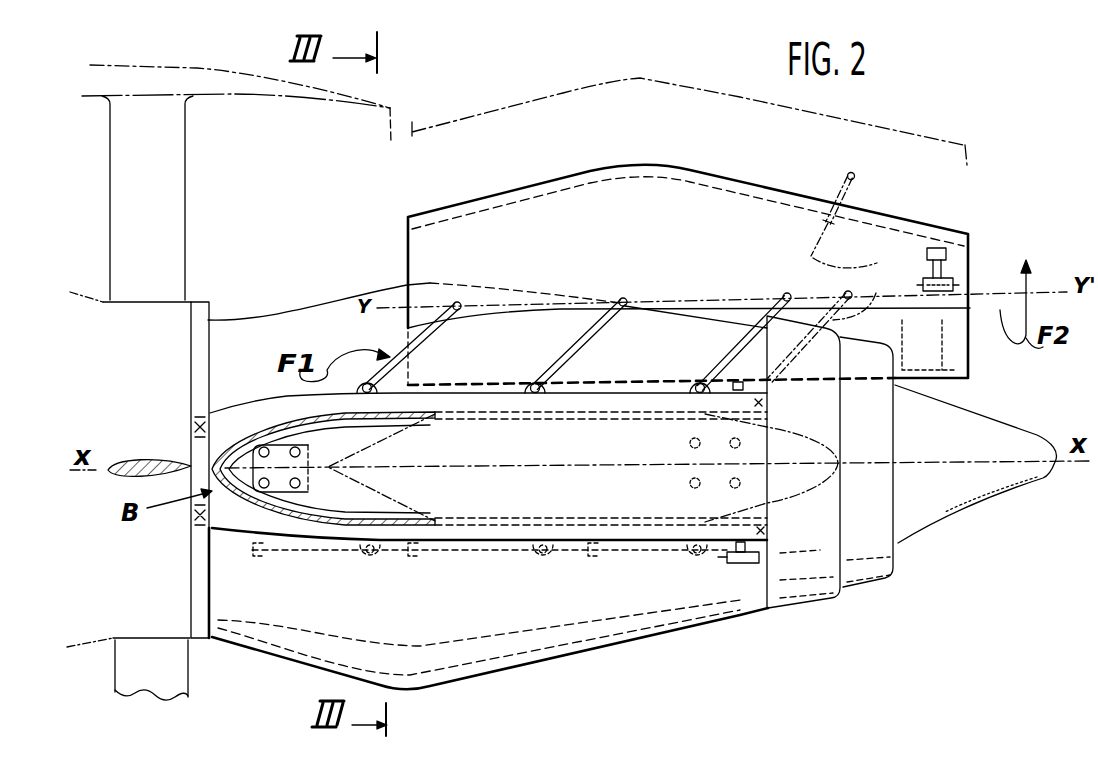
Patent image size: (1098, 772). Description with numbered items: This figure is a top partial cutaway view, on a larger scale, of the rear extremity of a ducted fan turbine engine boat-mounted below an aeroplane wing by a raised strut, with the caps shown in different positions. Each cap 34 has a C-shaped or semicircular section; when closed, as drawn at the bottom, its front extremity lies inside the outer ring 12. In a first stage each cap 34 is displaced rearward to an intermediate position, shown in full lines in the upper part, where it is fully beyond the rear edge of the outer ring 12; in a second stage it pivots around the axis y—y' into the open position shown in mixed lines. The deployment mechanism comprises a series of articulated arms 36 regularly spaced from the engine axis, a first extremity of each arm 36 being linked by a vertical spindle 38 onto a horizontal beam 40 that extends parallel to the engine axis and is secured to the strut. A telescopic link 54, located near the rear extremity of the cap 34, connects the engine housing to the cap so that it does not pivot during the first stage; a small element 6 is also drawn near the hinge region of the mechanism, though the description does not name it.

The outer ring 12 is at (204, 68).
The cap 34 is at (692, 143).
The articulated arm 36 is at (404, 352).
The vertical spindle 38 is at (550, 373).
The horizontal beam 40 is at (246, 410).
The telescopic link 54 is at (876, 293).
The hinge block 6 is at (745, 386).